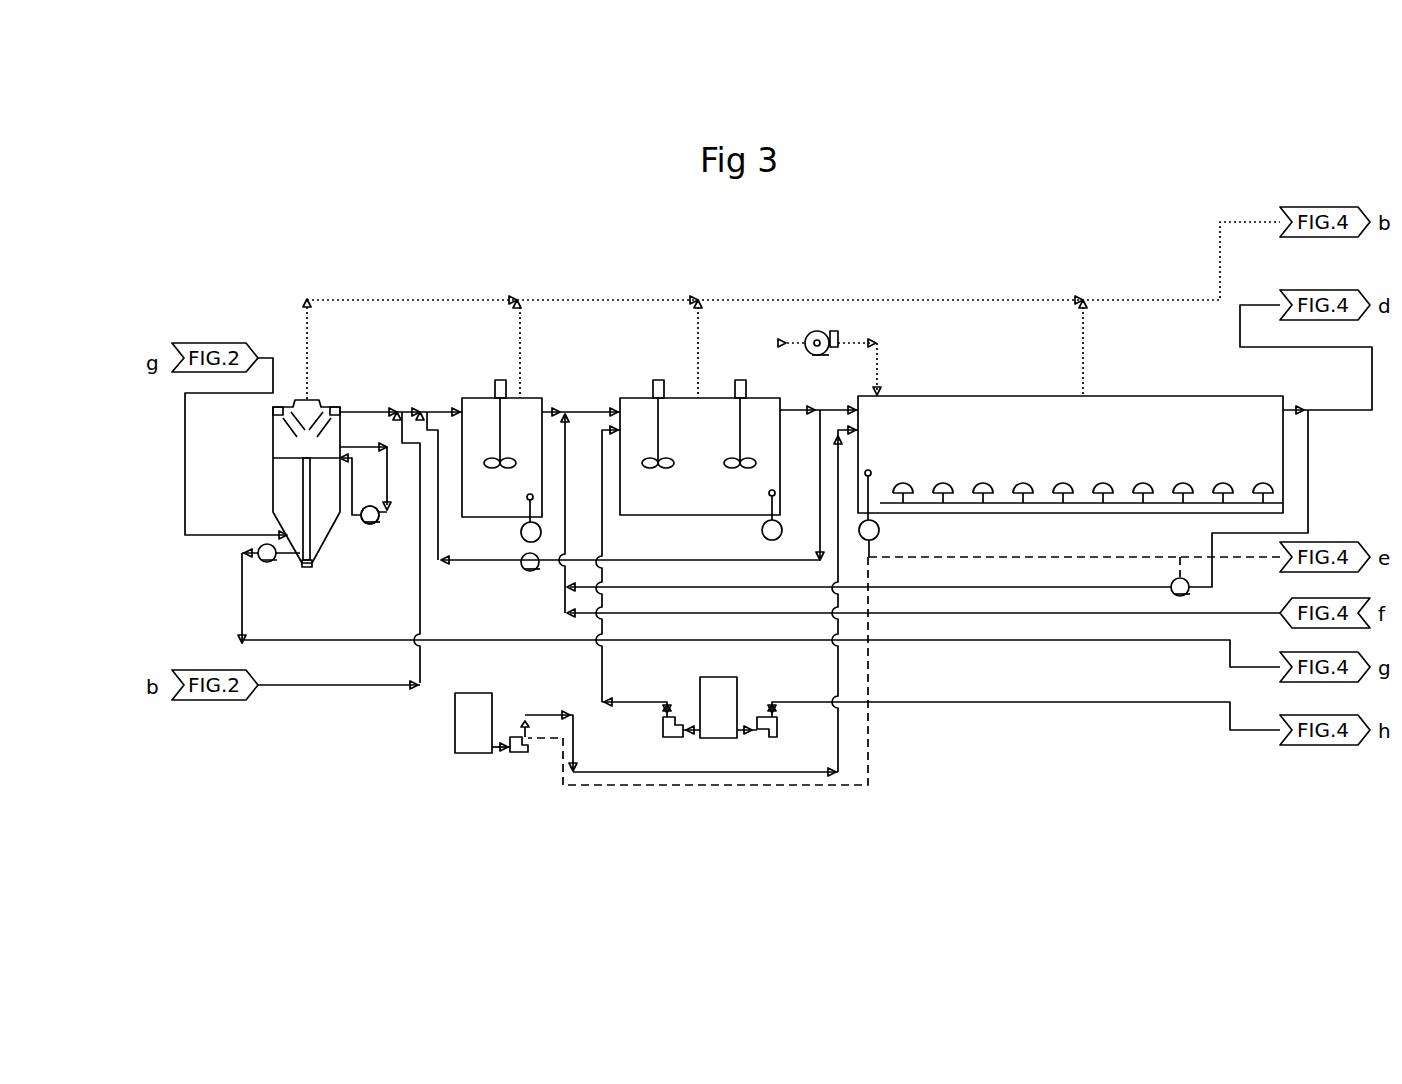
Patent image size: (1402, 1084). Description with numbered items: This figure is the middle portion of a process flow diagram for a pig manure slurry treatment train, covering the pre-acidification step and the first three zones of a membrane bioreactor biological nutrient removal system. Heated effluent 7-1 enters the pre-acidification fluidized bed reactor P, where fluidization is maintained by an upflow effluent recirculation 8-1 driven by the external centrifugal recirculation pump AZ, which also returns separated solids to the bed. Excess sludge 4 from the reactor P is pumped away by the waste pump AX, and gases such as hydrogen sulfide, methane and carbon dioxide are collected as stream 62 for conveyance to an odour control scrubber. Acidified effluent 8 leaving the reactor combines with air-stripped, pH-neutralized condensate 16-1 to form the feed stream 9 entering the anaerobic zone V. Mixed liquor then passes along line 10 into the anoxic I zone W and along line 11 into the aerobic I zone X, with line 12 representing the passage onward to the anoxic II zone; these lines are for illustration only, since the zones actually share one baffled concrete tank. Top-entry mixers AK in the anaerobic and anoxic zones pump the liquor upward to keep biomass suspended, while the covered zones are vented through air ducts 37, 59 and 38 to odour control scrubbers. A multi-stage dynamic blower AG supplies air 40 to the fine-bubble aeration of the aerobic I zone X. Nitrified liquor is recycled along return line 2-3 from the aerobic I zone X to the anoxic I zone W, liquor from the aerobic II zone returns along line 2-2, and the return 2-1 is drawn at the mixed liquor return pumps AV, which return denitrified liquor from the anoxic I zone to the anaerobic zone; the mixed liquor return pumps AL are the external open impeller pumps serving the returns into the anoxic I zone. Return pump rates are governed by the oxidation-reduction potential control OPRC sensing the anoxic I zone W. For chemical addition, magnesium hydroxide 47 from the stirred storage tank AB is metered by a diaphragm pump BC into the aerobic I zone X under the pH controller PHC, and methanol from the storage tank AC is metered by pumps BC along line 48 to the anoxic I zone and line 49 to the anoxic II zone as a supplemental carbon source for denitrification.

The air duct from AFBR to odour control scrubbers 62 is at (322, 349).
The air duct from MBR anaerobic zone to odour control scrubbers 37 is at (537, 352).
The air duct from MBR anoxic I zone to odour control scrubber 59 is at (715, 352).
The air duct from MBR aerobic I zone to odour control scrubbers 38 is at (1098, 351).
The air line from multi-stage dynamic blower discharge 40 is at (829, 351).
The mixed liquor flow from MBR aerobic I to anoxic II zone 12 is at (1306, 359).
The AFBR acidified effluent to MBR 8 is at (401, 404).
The MBR feed 9 is at (423, 534).
The mixed liquor flow from MBR anaerobic to anoxic I zone 10 is at (581, 499).
The mixed liquor flow from MBR anoxic I to aerobic I zone 11 is at (820, 469).
The heated DAFT effluent to AFBR 7-1 is at (236, 448).
The AFBR effluent recirculation line for bed fluidization 8-1 is at (379, 483).
The return line 2-1 is at (630, 576).
The liquor return from MBR aerobic II zone to anoxic I zone 2-2 is at (923, 604).
The nitrified liquor return from MBR aerobic I zone to anoxic I zone 2-3 is at (961, 503).
The excess solids waste line from AFBR to storage tank 4 is at (759, 610).
The air-stripped condensate to MBR 16-1 is at (339, 672).
The magnesium hydroxide alkalinity addition line 47 is at (681, 743).
The methanol addition line to anoxic I zone 48 is at (636, 693).
The methanol addition line to anoxic II zone 49 is at (1024, 701).
The pre-acidification fluidized bed reactor P is at (306, 483).
The BNR anaerobic zone V is at (502, 457).
The BNR anoxic I zone W is at (700, 456).
The BNR aerobic I zone X is at (1070, 454).
The top-entry mixer AK is at (619, 409).
The multi-stage dynamic blower AG is at (812, 331).
The mixed liquor return pump AL is at (1081, 482).
The FBR excess solids waste pump AX is at (271, 568).
The FBR effluent recirculation pump AZ is at (368, 530).
The mixed liquor return pump from anoxic I to anaerobic zone AV is at (530, 576).
The oxidation-reduction potential element control OPRC is at (623, 516).
The pH element control PHC is at (895, 513).
The magnesium hydroxide addition system storage tank AB is at (473, 723).
The methanol storage and feeding system AC is at (720, 707).
The chemical addition diaphragm pump BC is at (637, 744).